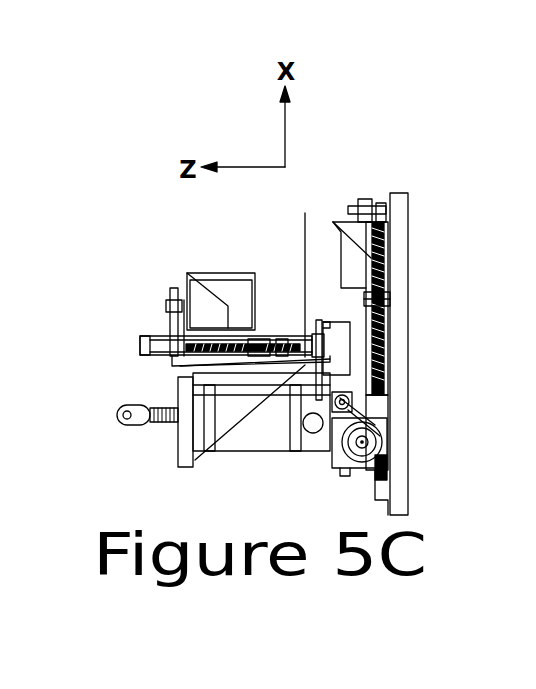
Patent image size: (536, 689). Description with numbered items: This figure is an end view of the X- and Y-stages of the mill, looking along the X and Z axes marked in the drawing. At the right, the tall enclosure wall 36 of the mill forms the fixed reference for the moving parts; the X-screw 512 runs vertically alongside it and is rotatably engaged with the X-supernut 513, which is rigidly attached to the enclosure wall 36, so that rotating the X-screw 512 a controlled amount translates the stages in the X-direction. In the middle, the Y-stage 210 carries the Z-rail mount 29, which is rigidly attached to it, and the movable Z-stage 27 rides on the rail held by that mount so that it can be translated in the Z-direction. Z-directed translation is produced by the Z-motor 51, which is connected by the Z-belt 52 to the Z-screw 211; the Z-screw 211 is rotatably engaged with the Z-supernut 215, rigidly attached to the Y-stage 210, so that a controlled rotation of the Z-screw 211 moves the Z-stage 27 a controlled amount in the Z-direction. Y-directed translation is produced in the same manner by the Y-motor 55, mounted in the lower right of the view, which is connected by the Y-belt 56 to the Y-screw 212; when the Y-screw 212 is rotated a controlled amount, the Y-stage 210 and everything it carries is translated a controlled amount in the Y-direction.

The Z-stage 27 is at (225, 418).
The Z-rail mount 29 is at (282, 348).
The enclosure wall 36 is at (405, 480).
The Z-motor 51 is at (237, 292).
The Z-belt 52 is at (172, 325).
The Y-motor 55 is at (383, 452).
The Y-belt 56 is at (358, 404).
The Y-stage 210 is at (293, 268).
The Z-screw 211 is at (200, 352).
The Y-screw 212 is at (360, 398).
The Z-supernut 215 is at (244, 337).
The X-screw 512 is at (372, 268).
The X-supernut 513 is at (388, 298).